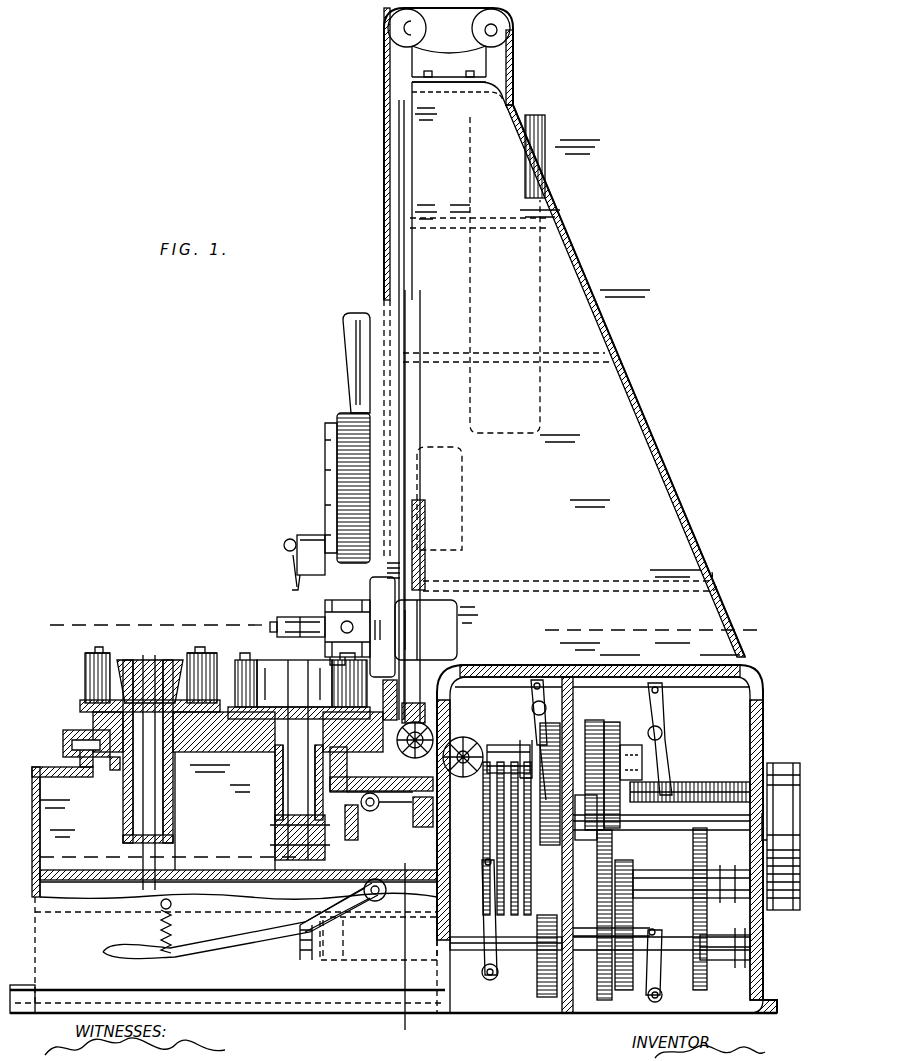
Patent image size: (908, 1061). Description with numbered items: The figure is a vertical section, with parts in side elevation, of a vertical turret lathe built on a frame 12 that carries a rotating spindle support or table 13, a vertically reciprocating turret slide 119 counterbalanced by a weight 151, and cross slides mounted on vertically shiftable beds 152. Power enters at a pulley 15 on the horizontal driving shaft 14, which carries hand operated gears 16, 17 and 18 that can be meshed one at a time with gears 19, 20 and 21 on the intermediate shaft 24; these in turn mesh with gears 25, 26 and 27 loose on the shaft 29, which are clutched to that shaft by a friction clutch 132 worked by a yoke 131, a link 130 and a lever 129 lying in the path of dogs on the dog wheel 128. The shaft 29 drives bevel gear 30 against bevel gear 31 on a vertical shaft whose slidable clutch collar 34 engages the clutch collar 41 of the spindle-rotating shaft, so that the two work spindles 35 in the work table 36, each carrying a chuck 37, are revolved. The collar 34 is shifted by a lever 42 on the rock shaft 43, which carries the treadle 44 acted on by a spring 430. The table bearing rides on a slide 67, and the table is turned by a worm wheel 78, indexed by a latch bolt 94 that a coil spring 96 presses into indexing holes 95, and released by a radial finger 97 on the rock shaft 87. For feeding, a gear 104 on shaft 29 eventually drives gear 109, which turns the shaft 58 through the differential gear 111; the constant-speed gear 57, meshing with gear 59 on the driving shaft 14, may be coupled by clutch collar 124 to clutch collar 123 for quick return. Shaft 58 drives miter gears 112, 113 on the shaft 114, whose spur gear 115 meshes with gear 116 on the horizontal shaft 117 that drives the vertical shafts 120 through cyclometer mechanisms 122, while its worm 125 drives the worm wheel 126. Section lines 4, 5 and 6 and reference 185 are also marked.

The weight 151 is at (564, 364).
The turret slide 119 is at (343, 397).
The vertical shaft 120 is at (425, 573).
The cyclometer mechanism 122 is at (462, 538).
The spur gear 115 is at (436, 631).
The vertically shiftable bed 152 is at (360, 625).
The section line 4 is at (401, 628).
The horizontal shaft 117 is at (395, 506).
The worm 125 is at (413, 751).
The spur gear 116 is at (443, 684).
The latch bolt 94 is at (381, 787).
The coil spring 96 is at (358, 835).
The rock shaft 87 is at (379, 805).
The work table 36 is at (235, 745).
The chuck 37 is at (88, 686).
The work spindle 35 is at (168, 782).
The indexing hole 95 is at (286, 745).
The radial finger 97 is at (275, 828).
The clutch collar 41 is at (275, 845).
The slidable clutch collar 34 is at (280, 858).
The lever 42 is at (322, 904).
The rotating vertical spindle support or table 13 is at (63, 750).
The slide 67 is at (35, 765).
The worm wheel 78 is at (112, 770).
The table bed / section line 5 is at (32, 857).
The frame 12 is at (393, 833).
The treadle 44 is at (235, 942).
The rock shaft 43 is at (387, 895).
The spring 430 is at (160, 937).
The bevel gear 31 is at (300, 935).
The bevel gear 30 is at (306, 960).
The worm wheel 126 is at (500, 945).
The link 185 is at (405, 925).
The gear 57 is at (540, 700).
The clutch collar 123 is at (520, 740).
The shaft 114 is at (470, 720).
The miter gear 113 is at (480, 740).
The miter gear 112 is at (478, 735).
The shaft 58 is at (512, 745).
The clutch collar 124 is at (542, 784).
The dog wheel 128 is at (520, 838).
The gear 59 is at (539, 880).
The lever 129 is at (482, 962).
The gear 104 is at (545, 990).
The link 130 is at (515, 955).
The section line 6 is at (390, 1035).
The gear 25 is at (590, 1005).
The gear 109 is at (588, 722).
The differential gear 111 is at (608, 722).
The driving shaft 14 is at (722, 782).
The hand operated gear 16 is at (584, 826).
The hand operated gear 17 is at (622, 852).
The hand operated gear 18 is at (700, 848).
The gear 20 is at (630, 882).
The intermediate shaft 24 is at (672, 900).
The gear 21 is at (708, 872).
The gear 19 is at (579, 913).
The friction clutch 132 is at (660, 932).
The yoke 131 is at (662, 1000).
The shaft 29 is at (722, 948).
The gear 27 is at (705, 990).
The gear 26 is at (622, 995).
The pulley 15 is at (780, 775).